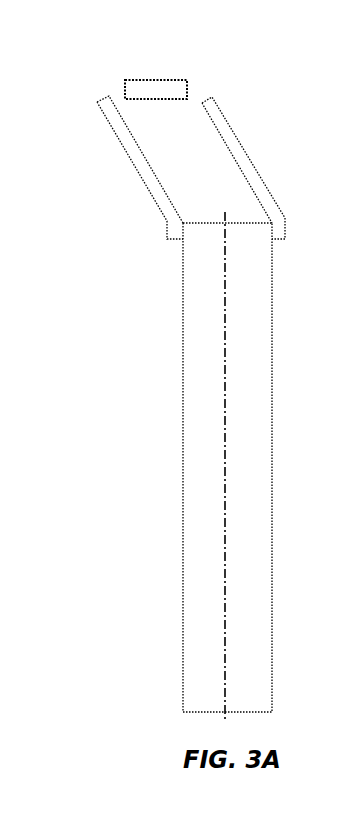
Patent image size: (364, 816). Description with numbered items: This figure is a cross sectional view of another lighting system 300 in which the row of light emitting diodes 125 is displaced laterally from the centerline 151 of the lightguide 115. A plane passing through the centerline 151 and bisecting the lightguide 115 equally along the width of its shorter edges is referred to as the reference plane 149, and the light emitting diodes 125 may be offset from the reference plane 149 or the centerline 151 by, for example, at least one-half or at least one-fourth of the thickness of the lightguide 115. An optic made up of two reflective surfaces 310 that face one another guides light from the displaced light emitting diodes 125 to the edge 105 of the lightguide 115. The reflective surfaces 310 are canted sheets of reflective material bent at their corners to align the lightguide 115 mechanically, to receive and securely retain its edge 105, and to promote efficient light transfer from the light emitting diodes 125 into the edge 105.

The lighting system 300 is at (257, 99).
The light emitting diodes 125 is at (122, 85).
The reflective surfaces 310 is at (144, 178).
The lightguide 115 is at (287, 432).
The edge 105 is at (218, 231).
The centerline 151 is at (225, 494).
The reference plane 149 is at (175, 466).